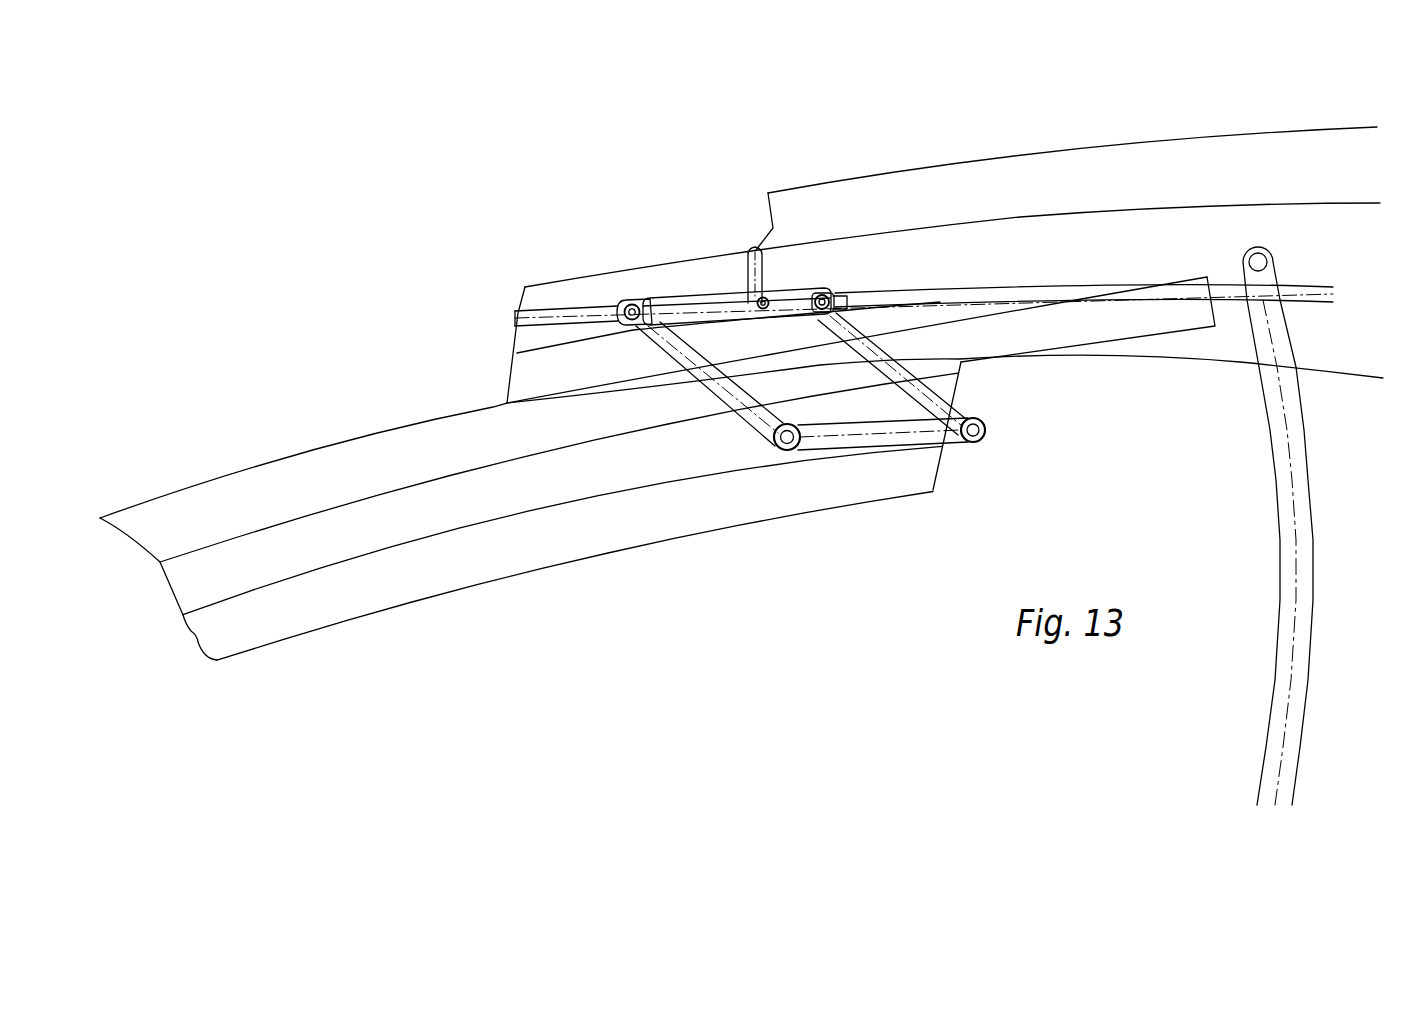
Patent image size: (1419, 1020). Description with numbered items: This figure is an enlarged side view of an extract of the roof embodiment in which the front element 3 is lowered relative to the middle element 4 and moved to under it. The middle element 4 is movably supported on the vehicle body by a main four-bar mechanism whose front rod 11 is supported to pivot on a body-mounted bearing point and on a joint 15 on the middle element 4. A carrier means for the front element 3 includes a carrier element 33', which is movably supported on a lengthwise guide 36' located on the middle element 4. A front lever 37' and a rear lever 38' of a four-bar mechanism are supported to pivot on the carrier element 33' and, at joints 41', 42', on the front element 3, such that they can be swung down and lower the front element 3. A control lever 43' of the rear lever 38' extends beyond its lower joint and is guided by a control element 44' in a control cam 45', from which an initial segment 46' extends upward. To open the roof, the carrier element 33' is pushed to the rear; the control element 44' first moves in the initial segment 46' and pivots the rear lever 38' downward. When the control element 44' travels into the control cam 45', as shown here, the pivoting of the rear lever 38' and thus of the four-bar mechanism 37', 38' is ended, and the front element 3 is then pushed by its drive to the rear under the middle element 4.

The front element 3 is at (494, 557).
The middle element 4 is at (1102, 158).
The front rod 11 is at (1292, 475).
The joint 15 is at (1258, 262).
The carrier element 33' is at (614, 243).
The lengthwise guide 36' is at (924, 196).
The front lever 37' is at (706, 469).
The rear lever 38' is at (892, 444).
The joint 41' is at (775, 507).
The joint 42' is at (966, 485).
The control lever 43' is at (797, 168).
The control element 44' is at (764, 190).
The control cam 45' is at (835, 203).
The initial segment 46' is at (728, 228).